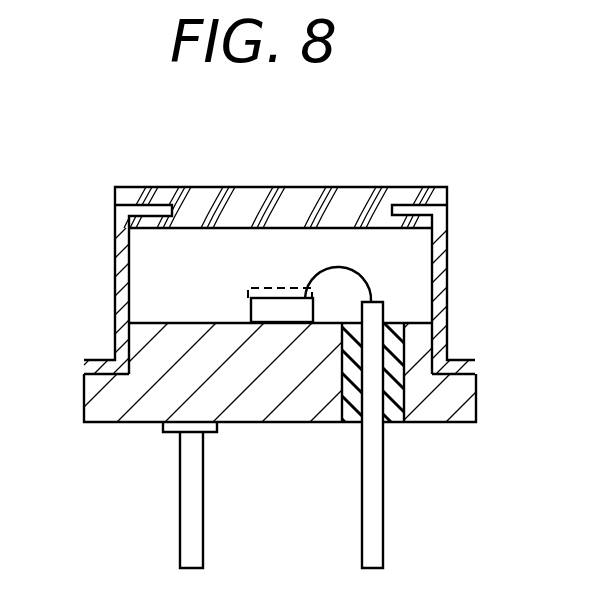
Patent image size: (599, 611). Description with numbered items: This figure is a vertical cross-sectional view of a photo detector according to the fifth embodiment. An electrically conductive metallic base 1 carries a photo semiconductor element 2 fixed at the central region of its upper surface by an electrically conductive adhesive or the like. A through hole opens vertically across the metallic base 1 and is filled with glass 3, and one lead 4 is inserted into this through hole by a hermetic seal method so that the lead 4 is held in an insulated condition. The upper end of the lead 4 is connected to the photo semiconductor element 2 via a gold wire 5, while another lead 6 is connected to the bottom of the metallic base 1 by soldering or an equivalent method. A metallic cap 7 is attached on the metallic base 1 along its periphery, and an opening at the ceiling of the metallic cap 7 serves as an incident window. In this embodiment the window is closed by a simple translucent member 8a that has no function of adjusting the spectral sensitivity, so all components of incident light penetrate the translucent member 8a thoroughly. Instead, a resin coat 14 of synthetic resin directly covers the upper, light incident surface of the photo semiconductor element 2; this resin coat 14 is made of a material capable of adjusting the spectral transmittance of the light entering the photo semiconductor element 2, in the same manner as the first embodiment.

The metallic base 1 is at (84, 395).
The photo semiconductor element 2 is at (251, 305).
The glass 3 is at (397, 422).
The lead 4 is at (377, 530).
The gold wire 5 is at (358, 272).
The lead 6 is at (192, 528).
The metallic cap 7 is at (116, 216).
The translucent member 8a is at (368, 195).
The resin coat 14 is at (276, 288).